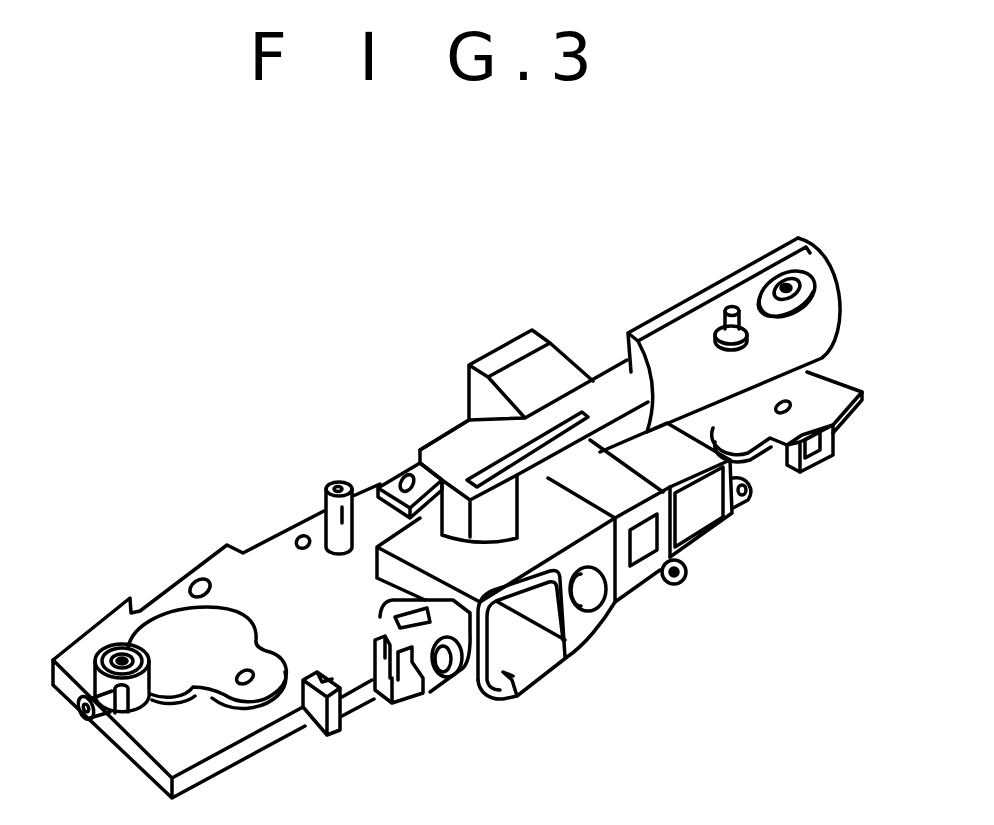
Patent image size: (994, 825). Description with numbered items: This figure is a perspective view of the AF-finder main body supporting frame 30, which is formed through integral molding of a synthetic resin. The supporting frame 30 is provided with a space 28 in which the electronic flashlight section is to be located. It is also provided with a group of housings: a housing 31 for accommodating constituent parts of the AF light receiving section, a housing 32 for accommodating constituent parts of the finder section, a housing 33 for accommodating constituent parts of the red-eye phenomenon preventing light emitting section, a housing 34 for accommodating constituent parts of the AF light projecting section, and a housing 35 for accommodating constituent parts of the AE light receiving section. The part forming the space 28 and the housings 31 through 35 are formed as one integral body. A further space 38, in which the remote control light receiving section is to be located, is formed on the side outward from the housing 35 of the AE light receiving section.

The space 28 is at (833, 402).
The AF-finder main body supporting frame 30 is at (670, 201).
The housing 31 is at (699, 515).
The housing 32 is at (640, 577).
The housing 33 is at (583, 585).
The housing 34 is at (533, 653).
The housing 35 is at (447, 670).
The space 38 is at (353, 703).